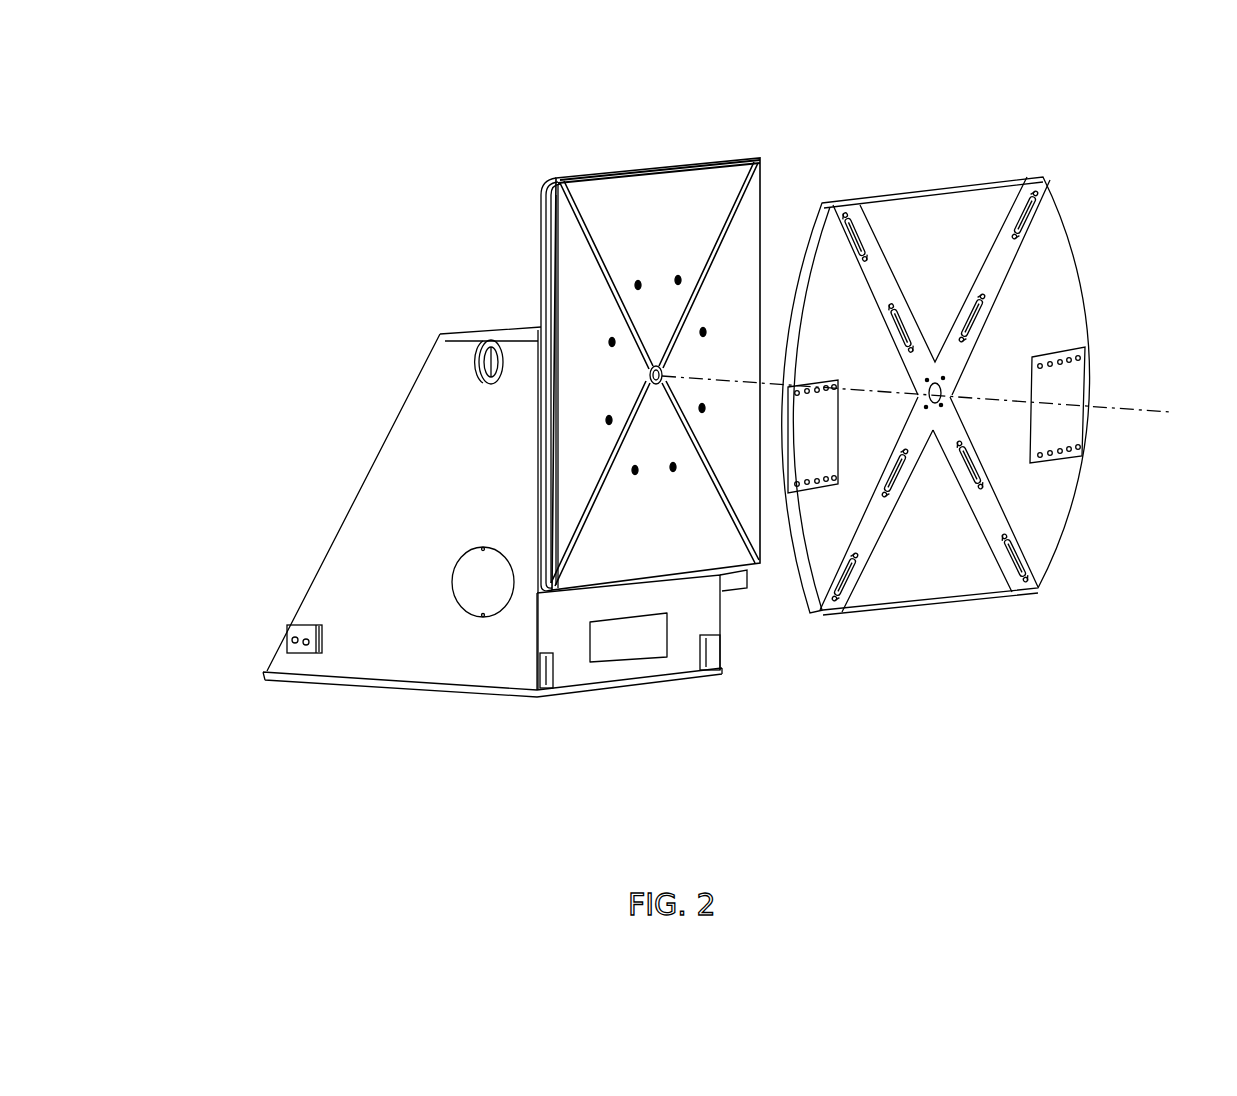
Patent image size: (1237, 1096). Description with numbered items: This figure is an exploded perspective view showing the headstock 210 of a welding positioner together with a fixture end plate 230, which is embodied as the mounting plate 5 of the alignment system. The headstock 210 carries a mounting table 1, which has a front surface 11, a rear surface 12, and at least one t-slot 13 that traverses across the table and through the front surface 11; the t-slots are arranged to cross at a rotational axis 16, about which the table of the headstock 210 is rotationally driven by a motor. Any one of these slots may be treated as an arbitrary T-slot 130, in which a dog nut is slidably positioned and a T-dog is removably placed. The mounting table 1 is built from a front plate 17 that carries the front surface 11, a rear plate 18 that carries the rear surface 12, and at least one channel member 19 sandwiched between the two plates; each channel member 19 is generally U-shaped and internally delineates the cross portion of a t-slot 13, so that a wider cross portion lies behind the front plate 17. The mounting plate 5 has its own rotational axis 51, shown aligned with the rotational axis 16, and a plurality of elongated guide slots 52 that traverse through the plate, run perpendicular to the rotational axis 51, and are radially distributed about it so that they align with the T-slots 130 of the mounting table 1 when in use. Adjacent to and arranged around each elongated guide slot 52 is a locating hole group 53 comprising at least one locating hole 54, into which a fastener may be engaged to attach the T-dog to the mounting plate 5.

The mounting table 1 is at (704, 98).
The headstock 210 is at (347, 270).
The fixture end plate 230 is at (1006, 120).
The mounting plate 5 is at (1060, 255).
The front surface 11 is at (680, 224).
The rear surface 12 is at (536, 207).
The t-slot 13 is at (585, 198).
The arbitrary T-slot 130 is at (610, 290).
The rotational axis 16 is at (1148, 410).
The front plate 17 is at (548, 305).
The rear plate 18 is at (543, 272).
The channel member 19 is at (546, 181).
The rotational axis 51 is at (916, 394).
The elongated guide slot 52 is at (857, 232).
The locating hole group 53 is at (862, 278).
The locating hole 54 is at (858, 258).